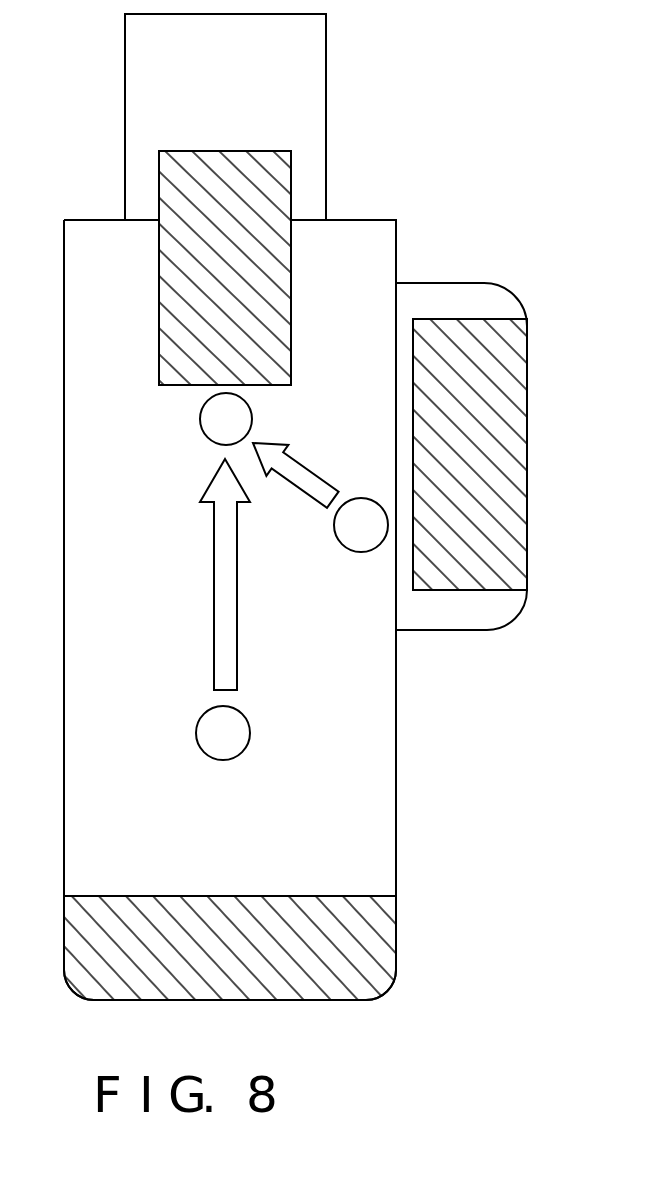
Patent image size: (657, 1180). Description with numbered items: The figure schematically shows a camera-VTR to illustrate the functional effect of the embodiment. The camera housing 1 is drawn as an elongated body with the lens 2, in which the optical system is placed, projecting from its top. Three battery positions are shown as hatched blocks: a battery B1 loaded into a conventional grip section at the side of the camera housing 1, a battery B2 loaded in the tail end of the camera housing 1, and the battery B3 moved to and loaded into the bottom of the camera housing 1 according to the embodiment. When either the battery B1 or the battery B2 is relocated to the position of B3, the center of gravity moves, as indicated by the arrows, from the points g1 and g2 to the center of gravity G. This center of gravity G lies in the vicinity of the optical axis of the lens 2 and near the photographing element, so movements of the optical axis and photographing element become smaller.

The camera housing 1 is at (73, 276).
The lens 2 is at (137, 48).
The battery loaded into conventional grip section B1 is at (498, 582).
The battery loaded in tail end of camera housing B2 is at (378, 948).
The battery loaded into bottom of camera housing B3 is at (282, 176).
The center of gravity G is at (207, 419).
The center of gravity point g1 is at (320, 517).
The center of gravity point g2 is at (223, 630).